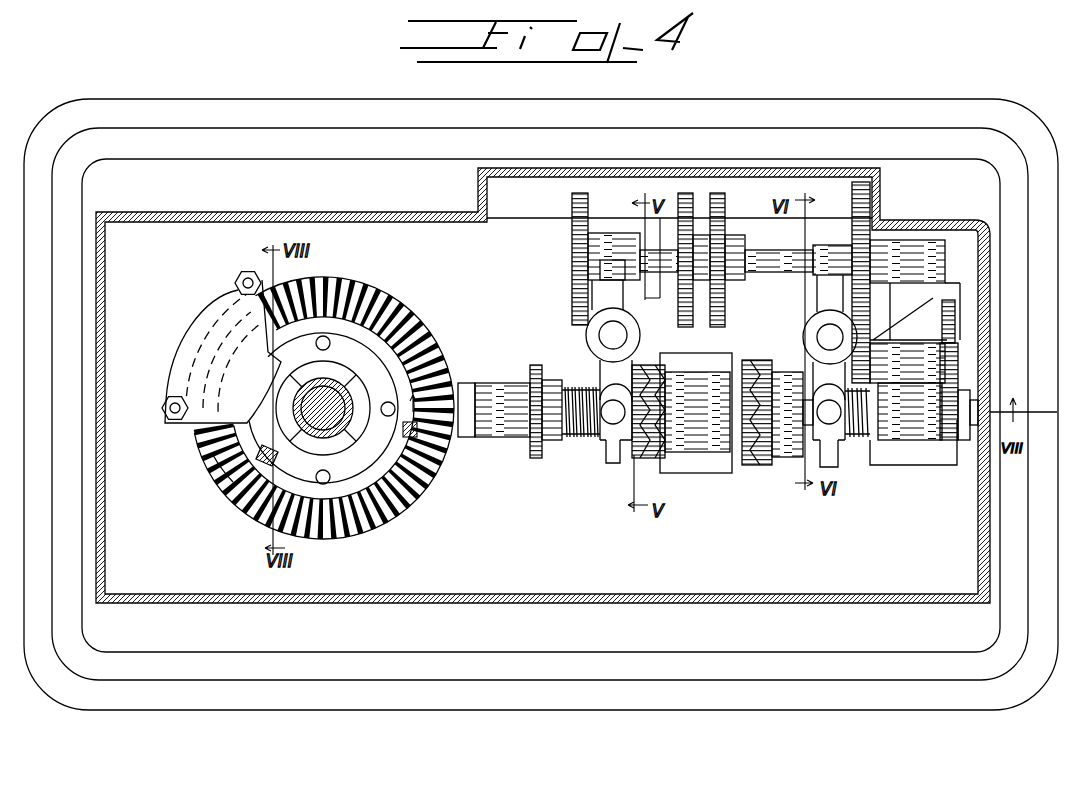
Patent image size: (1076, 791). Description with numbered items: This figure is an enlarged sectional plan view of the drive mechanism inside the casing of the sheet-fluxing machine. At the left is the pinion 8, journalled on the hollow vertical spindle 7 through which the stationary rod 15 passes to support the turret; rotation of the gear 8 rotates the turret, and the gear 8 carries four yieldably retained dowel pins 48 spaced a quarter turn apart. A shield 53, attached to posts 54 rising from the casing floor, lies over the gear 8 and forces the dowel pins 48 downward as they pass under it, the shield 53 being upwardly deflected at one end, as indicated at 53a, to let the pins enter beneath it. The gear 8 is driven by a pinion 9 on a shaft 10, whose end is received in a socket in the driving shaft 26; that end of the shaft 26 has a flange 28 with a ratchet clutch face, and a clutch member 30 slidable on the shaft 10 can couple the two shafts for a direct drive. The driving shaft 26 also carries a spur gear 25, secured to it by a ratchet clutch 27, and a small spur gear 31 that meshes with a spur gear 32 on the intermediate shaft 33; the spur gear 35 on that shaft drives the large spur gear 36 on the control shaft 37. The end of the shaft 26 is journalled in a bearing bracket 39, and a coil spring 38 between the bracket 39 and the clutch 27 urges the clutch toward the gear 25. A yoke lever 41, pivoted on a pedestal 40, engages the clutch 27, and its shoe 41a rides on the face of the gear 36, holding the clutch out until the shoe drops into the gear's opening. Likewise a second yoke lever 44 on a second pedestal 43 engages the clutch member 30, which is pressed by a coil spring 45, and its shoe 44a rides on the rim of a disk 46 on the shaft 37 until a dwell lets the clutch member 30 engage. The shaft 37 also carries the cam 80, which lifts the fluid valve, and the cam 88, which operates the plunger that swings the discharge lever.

The hollow vertical spindle 7 is at (333, 440).
The pinion 8 is at (423, 490).
The pinion 9 is at (443, 393).
The shaft 10 is at (590, 390).
The stationary rod 15 is at (222, 465).
The spur gear 25 is at (752, 375).
The driving shaft 26 is at (993, 405).
The clutch 27 is at (765, 466).
The flange 28 is at (696, 439).
The clutch member 30 is at (638, 458).
The small spur gear 31 is at (957, 450).
The spur gear 32 is at (957, 340).
The intermediate shaft 33 is at (972, 357).
The spur gear 35 is at (885, 345).
The large spur gear 36 is at (871, 205).
The control shaft 37 is at (753, 262).
The coil spring 38 is at (857, 440).
The bearing bracket 39 is at (923, 430).
The pedestal 40 is at (815, 355).
The yoke lever 41 is at (828, 298).
The shoe 41a is at (850, 252).
The second pedestal 43 is at (645, 334).
The yoke lever 44 is at (600, 300).
The shoe 44a is at (596, 250).
The coil spring 45 is at (577, 438).
The disk 46 is at (576, 248).
The dowel pins 48 is at (325, 343).
The shield 53 is at (210, 365).
The upwardly deflected end 53a is at (272, 465).
The posts 54 is at (236, 280).
The cam 80 is at (687, 193).
The cam 88 is at (718, 193).